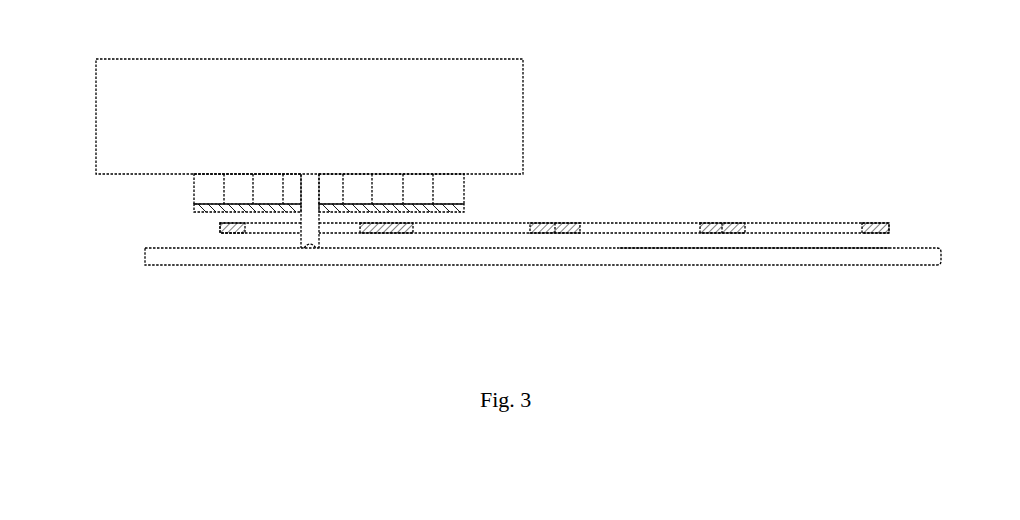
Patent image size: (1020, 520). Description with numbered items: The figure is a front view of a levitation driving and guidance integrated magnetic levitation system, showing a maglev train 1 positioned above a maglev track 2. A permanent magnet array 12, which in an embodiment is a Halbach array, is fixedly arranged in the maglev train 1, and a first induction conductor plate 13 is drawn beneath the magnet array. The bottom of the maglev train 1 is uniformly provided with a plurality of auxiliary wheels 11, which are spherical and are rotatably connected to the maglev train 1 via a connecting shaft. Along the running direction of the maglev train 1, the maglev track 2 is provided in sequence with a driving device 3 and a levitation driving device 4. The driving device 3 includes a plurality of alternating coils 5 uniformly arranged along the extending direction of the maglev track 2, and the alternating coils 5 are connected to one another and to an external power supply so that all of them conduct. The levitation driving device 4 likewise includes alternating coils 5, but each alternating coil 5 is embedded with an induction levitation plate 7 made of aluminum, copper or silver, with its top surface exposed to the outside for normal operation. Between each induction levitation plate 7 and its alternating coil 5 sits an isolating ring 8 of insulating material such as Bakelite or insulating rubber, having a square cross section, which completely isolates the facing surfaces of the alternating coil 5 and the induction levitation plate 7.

The maglev train 1 is at (124, 112).
The maglev track 2 is at (750, 257).
The driving device 3 is at (443, 236).
The levitation driving device 4 is at (628, 233).
The alternating coil 5 is at (530, 228).
The induction levitation plate 7 is at (632, 227).
The isolating ring 8 is at (698, 226).
The auxiliary wheel 11 is at (310, 198).
The permanent magnet array 12 is at (239, 190).
The first induction conductor plate 13 is at (342, 205).